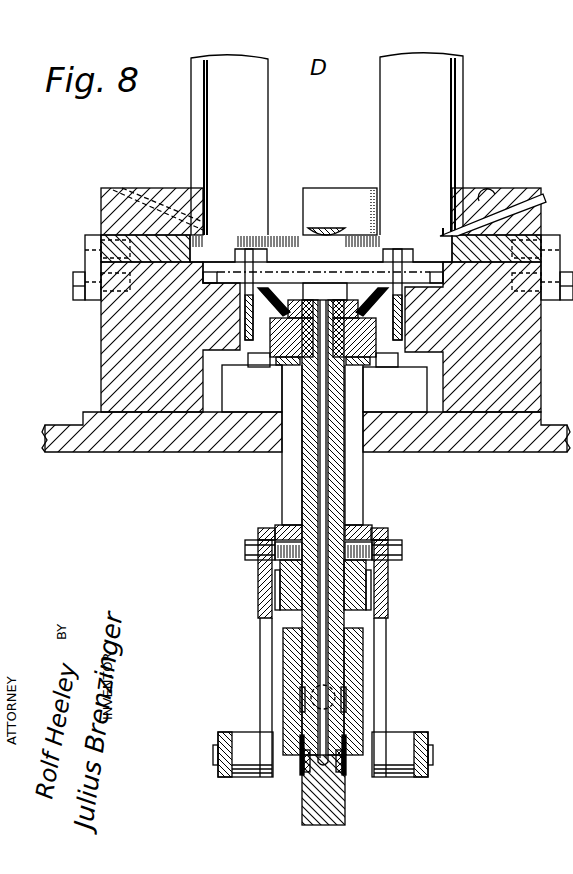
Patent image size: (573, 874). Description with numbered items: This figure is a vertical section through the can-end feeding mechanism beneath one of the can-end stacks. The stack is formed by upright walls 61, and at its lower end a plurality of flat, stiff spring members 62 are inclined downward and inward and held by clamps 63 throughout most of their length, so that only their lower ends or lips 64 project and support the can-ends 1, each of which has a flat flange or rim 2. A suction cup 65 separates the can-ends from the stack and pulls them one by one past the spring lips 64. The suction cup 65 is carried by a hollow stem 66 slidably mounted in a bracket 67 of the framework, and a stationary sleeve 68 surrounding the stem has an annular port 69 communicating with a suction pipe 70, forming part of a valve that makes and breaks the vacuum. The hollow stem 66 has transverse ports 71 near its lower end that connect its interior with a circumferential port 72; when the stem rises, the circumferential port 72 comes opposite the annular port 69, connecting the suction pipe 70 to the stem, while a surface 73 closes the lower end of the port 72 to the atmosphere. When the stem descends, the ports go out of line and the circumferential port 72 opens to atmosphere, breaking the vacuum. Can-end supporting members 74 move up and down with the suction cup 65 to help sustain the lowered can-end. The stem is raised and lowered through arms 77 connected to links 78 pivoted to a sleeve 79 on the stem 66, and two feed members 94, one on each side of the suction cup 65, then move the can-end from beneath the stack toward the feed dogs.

The can-end 1 is at (272, 264).
The flat flange or rim 2 is at (208, 277).
The upright walls 61 is at (191, 125).
The flat, stiff spring members 62 is at (522, 188).
The clamps 63 is at (307, 190).
The lower ends or lips 64 is at (322, 227).
The suction cup 65 is at (262, 300).
The hollow stem 66 is at (312, 478).
The bracket 67 is at (290, 500).
The stationary sleeve 68 is at (348, 655).
The annular port 69 is at (342, 700).
The suction pipe 70 is at (310, 690).
The transverse ports 71 is at (307, 768).
The circumferential port 72 is at (345, 735).
The surface 73 is at (345, 790).
The can-end supporting members 74 is at (328, 290).
The arms 77 is at (218, 738).
The links 78 is at (262, 608).
The sleeve 79 is at (290, 583).
The feed members 94 is at (249, 250).